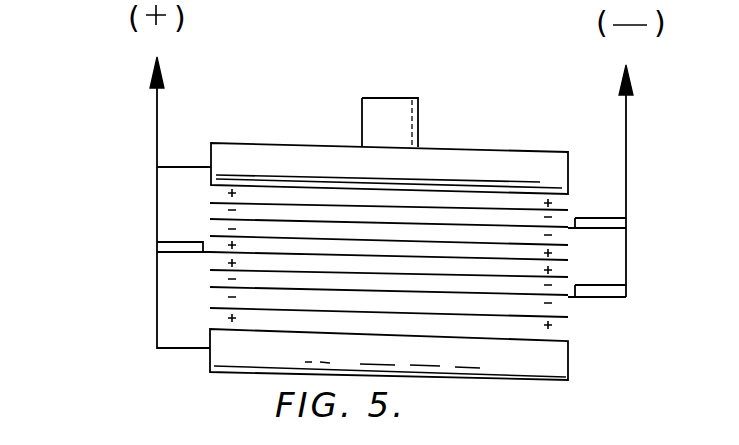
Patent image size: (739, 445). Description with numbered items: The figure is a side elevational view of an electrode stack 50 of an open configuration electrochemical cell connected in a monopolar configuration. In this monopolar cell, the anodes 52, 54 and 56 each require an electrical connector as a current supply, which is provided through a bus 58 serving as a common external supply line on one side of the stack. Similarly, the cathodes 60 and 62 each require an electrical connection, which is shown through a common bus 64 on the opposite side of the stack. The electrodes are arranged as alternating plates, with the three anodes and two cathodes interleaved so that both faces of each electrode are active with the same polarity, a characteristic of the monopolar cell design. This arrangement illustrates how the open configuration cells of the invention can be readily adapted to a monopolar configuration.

The multilayer capacitor assembly 50 is at (132, 234).
The anode 52 is at (296, 143).
The anode 54 is at (211, 256).
The anode 56 is at (210, 360).
The bus 58 is at (157, 315).
The cathode 60 is at (562, 226).
The cathode 62 is at (562, 296).
The bus 64 is at (627, 257).